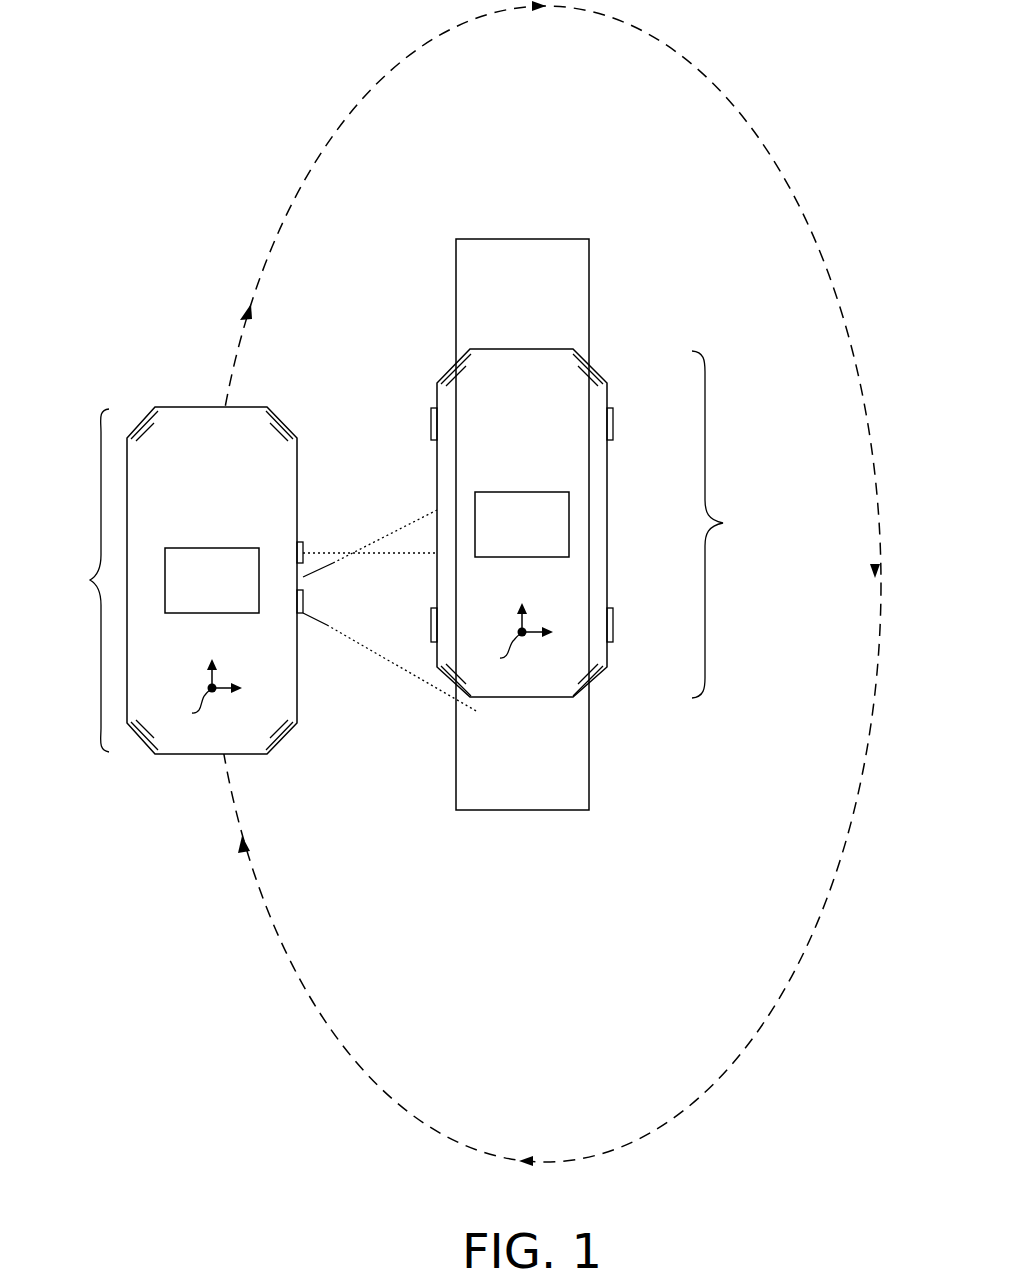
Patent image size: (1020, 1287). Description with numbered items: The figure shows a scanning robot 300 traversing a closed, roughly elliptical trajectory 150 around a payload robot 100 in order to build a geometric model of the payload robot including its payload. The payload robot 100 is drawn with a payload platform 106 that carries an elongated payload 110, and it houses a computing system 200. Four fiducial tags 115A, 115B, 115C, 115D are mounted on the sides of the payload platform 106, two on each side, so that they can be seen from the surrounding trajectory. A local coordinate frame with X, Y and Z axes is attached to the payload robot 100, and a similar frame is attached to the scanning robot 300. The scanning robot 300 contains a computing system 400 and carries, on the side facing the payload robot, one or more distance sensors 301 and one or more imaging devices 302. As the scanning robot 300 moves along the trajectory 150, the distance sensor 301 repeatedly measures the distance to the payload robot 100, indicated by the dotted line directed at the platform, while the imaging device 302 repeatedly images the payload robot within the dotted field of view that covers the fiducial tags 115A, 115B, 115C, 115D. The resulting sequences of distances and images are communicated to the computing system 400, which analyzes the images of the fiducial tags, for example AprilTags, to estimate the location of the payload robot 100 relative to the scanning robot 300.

The payload robot 100 is at (723, 523).
The payload platform 106 is at (597, 481).
The payload 110 is at (589, 300).
The fiducial tag 115A is at (431, 420).
The fiducial tag 115B is at (431, 625).
The fiducial tag 115C is at (613, 625).
The fiducial tag 115D is at (613, 420).
The trajectory 150 is at (748, 130).
The computing system 200 is at (502, 534).
The scanning robot 300 is at (90, 580).
The distance sensor 301 is at (303, 549).
The imaging device 302 is at (303, 596).
The computing system 400 is at (192, 590).